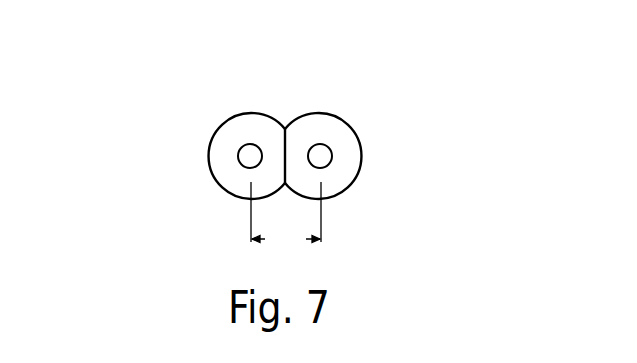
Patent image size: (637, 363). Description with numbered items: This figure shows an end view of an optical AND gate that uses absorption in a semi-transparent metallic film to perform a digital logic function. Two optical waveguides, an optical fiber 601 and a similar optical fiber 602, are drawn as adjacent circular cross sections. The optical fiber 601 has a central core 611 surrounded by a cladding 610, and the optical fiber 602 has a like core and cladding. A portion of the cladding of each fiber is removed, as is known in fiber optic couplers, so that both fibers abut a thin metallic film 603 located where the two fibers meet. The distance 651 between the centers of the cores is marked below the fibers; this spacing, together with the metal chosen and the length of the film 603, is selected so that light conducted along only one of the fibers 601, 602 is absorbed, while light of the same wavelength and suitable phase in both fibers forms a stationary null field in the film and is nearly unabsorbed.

The optical fiber 601 is at (234, 197).
The optical fiber 602 is at (361, 155).
The thin metallic film 603 is at (296, 142).
The cladding 610 is at (209, 149).
The core 611 is at (245, 155).
The distance between cores 651 is at (286, 218).